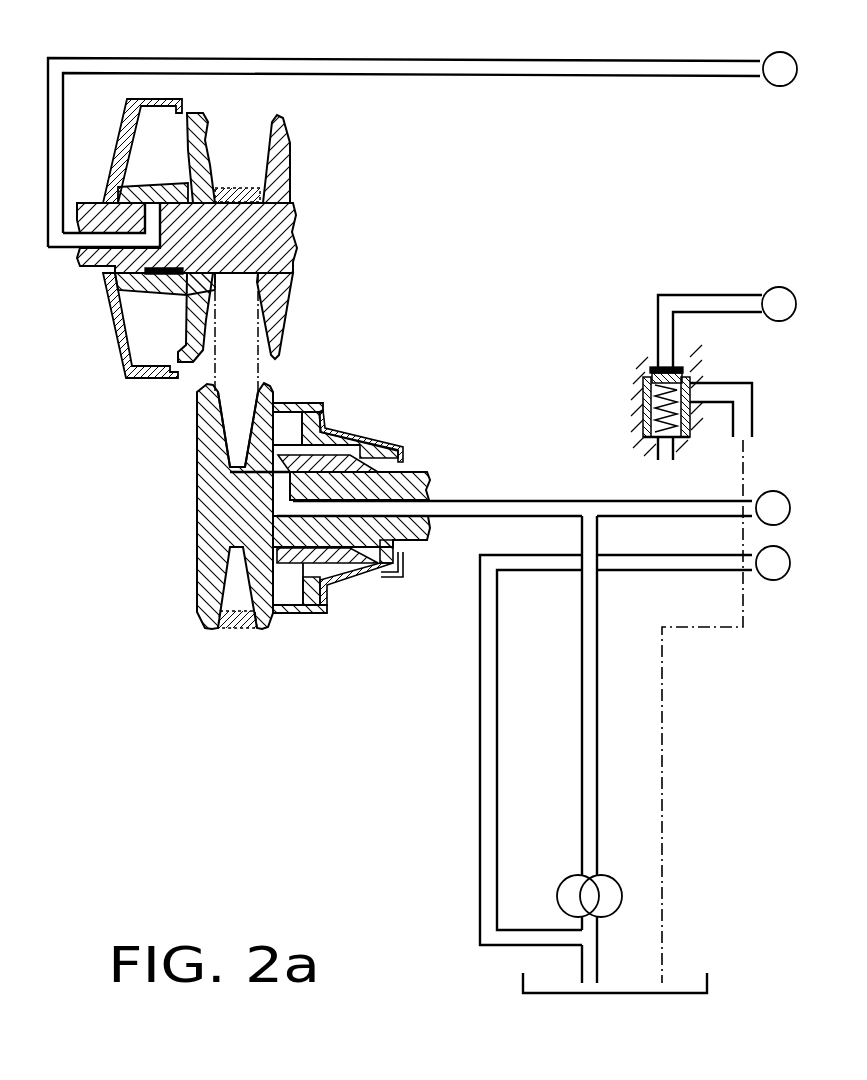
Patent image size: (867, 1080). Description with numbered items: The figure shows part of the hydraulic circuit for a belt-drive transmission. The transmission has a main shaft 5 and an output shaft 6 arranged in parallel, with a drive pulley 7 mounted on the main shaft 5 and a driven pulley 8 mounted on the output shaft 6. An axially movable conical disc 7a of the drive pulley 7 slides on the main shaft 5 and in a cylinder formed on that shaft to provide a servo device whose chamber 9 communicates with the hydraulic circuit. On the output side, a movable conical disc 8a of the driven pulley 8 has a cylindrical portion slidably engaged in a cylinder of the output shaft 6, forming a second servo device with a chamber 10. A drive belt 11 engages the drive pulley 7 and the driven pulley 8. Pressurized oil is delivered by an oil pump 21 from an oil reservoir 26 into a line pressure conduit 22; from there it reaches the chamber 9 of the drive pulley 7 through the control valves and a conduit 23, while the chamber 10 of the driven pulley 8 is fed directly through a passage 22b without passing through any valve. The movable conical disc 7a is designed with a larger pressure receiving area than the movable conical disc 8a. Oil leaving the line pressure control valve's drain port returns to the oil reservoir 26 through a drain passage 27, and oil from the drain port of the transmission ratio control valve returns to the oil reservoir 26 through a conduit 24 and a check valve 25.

The main shaft 5 is at (95, 258).
The output shaft 6 is at (418, 482).
The drive pulley 7 is at (295, 150).
The movable conical disc 7a is at (203, 132).
The driven pulley 8 is at (192, 547).
The movable conical disc 8a is at (253, 438).
The chamber 9 is at (162, 162).
The chamber 10 is at (367, 556).
The drive belt 11 is at (238, 629).
The oil pump 21 is at (612, 890).
The line pressure conduit 22 is at (713, 500).
The passage 22b is at (553, 500).
The conduit 23 is at (593, 59).
The conduit 24 is at (713, 294).
The check valve 25 is at (643, 405).
The oil reservoir 26 is at (708, 983).
The drain passage 27 is at (633, 573).